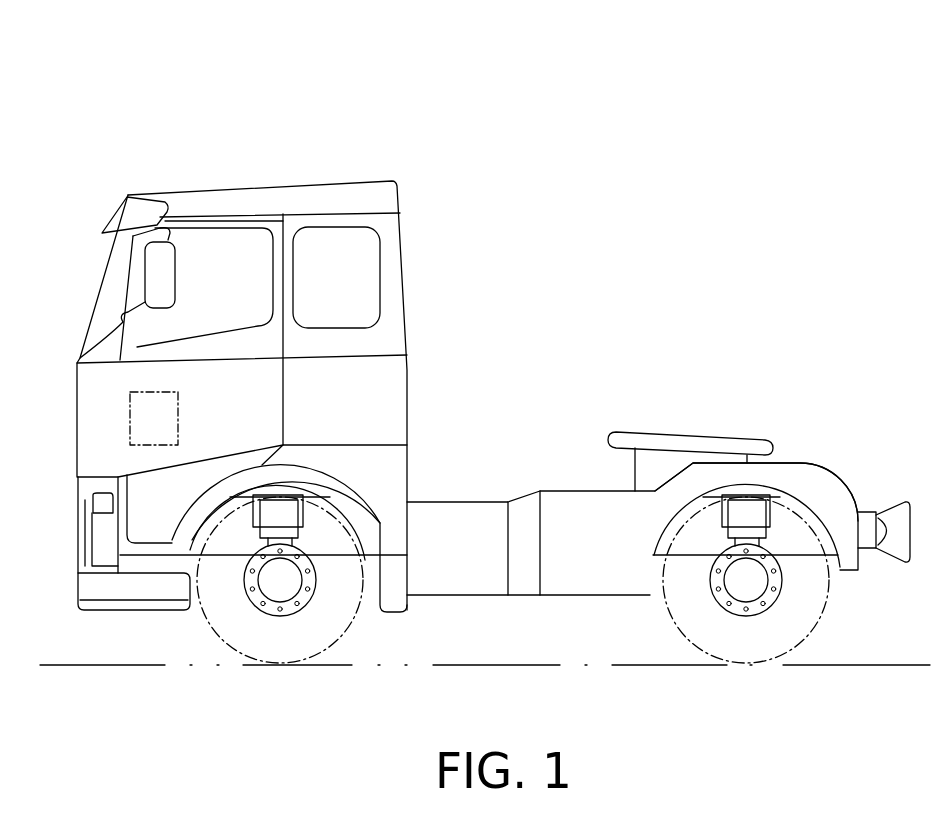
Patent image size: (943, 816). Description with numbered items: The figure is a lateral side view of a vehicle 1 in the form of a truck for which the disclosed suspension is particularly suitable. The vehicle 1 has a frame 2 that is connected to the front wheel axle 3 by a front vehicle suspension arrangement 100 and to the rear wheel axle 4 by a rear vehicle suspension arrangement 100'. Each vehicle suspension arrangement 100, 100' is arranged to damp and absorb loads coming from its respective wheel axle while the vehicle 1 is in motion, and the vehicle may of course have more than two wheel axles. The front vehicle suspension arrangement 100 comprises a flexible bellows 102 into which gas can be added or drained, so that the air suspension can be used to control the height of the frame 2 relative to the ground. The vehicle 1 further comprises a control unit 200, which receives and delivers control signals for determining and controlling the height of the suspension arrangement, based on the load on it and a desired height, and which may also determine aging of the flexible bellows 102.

The vehicle 1 is at (485, 367).
The frame 2 is at (347, 523).
The front wheel axle 3 is at (280, 580).
The rear wheel axle 4 is at (746, 580).
The front vehicle suspension arrangement 100 is at (318, 605).
The rear vehicle suspension arrangement 100' is at (788, 605).
The flexible bellows 102 is at (278, 520).
The control unit 200 is at (130, 392).